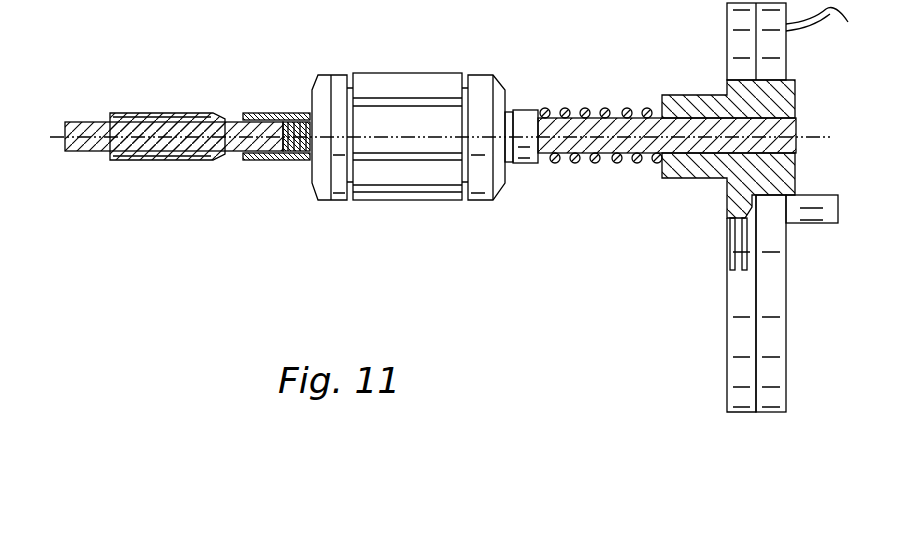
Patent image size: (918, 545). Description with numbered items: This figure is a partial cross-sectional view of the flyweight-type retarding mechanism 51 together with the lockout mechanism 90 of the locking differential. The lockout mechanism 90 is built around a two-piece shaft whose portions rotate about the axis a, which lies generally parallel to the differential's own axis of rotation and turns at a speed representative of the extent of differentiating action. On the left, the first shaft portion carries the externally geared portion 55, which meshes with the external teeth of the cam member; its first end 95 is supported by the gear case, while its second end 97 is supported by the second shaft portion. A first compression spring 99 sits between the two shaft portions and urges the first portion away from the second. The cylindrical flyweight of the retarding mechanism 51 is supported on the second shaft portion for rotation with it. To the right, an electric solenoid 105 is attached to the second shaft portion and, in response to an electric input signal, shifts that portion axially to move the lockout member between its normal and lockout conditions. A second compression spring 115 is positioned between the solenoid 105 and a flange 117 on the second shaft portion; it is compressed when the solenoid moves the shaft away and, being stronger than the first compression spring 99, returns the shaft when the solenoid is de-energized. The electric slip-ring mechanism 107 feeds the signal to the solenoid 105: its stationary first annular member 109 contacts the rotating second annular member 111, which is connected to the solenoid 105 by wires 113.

The axis a is at (813, 133).
The first end 95 is at (75, 120).
The externally geared portion 55 is at (176, 113).
The first compression spring 99 is at (283, 158).
The second end 97 is at (318, 130).
The lockout mechanism 90 is at (231, 175).
The retarding mechanism 51 is at (421, 207).
The flange 117 is at (535, 110).
The second compression spring 115 is at (596, 163).
The electric solenoid 105 is at (690, 96).
The electric slip-ring mechanism 107 is at (737, 223).
The second annular member 111 is at (730, 302).
The first annular member 109 is at (782, 348).
The wires 113 is at (733, 232).